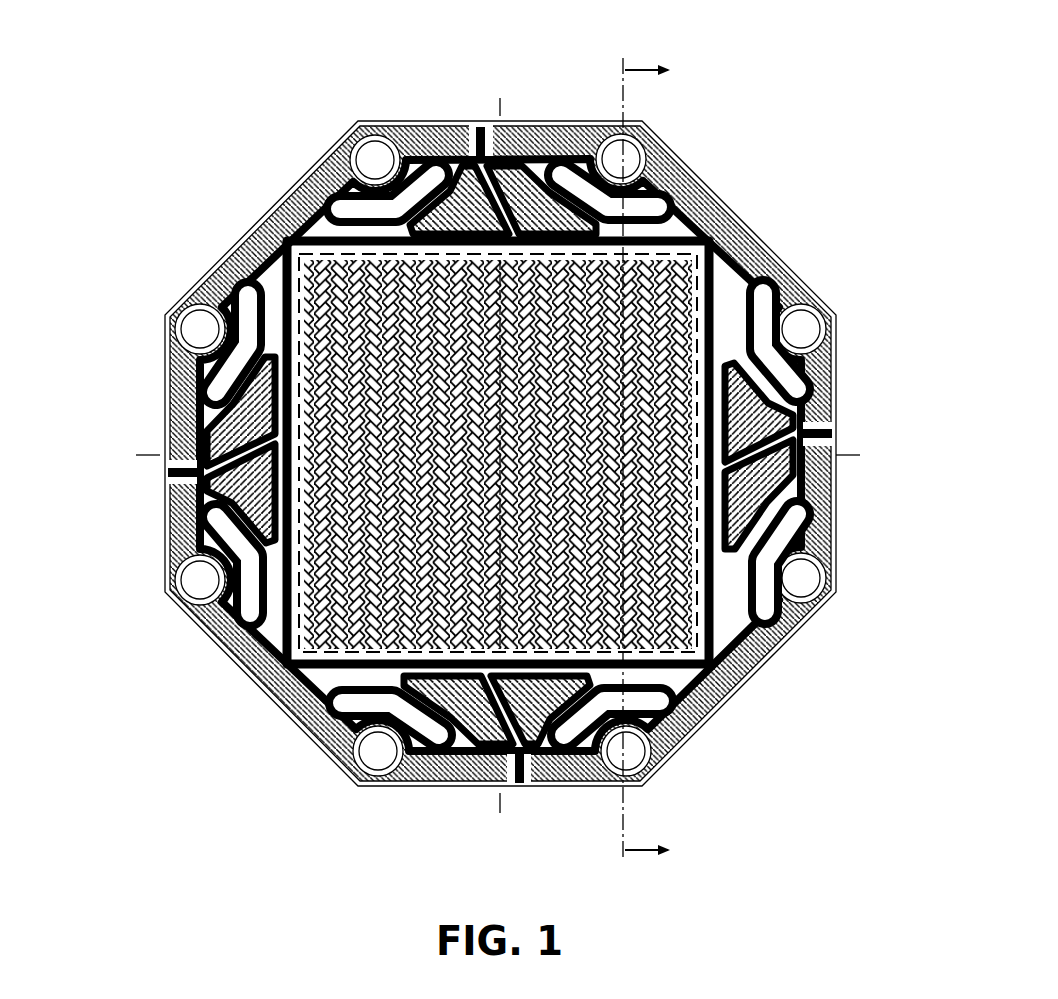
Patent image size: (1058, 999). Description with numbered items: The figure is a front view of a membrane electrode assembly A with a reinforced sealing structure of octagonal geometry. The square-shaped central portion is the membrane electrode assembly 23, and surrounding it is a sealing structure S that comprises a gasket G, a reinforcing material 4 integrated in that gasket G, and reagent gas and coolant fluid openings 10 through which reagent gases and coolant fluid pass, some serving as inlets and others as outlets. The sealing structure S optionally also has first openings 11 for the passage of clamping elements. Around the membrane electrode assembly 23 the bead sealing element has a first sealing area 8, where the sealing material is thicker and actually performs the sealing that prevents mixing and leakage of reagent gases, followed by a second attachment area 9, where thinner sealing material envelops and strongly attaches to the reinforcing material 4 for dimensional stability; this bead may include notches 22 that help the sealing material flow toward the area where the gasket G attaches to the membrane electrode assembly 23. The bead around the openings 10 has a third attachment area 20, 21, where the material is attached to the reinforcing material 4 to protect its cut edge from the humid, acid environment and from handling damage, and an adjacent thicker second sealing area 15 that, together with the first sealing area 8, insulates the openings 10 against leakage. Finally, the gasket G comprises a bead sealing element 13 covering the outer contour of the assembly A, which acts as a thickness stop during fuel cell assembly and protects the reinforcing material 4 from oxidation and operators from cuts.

The reinforcing material 4 is at (743, 247).
The first sealing area 8 is at (196, 480).
The second attachment area 9 is at (198, 407).
The reagent gas and coolant fluid openings 10 is at (417, 180).
The first opening 11 is at (602, 128).
The bead sealing element 13 is at (417, 778).
The second sealing area 15 is at (255, 512).
The third attachment area 20 is at (810, 453).
The third attachment area 21 is at (765, 512).
The notches 22 is at (705, 350).
The membrane electrode assembly 23 is at (383, 553).
The sealing structure S is at (490, 160).
The gasket G is at (714, 220).
The membrane electrode assembly A is at (768, 62).